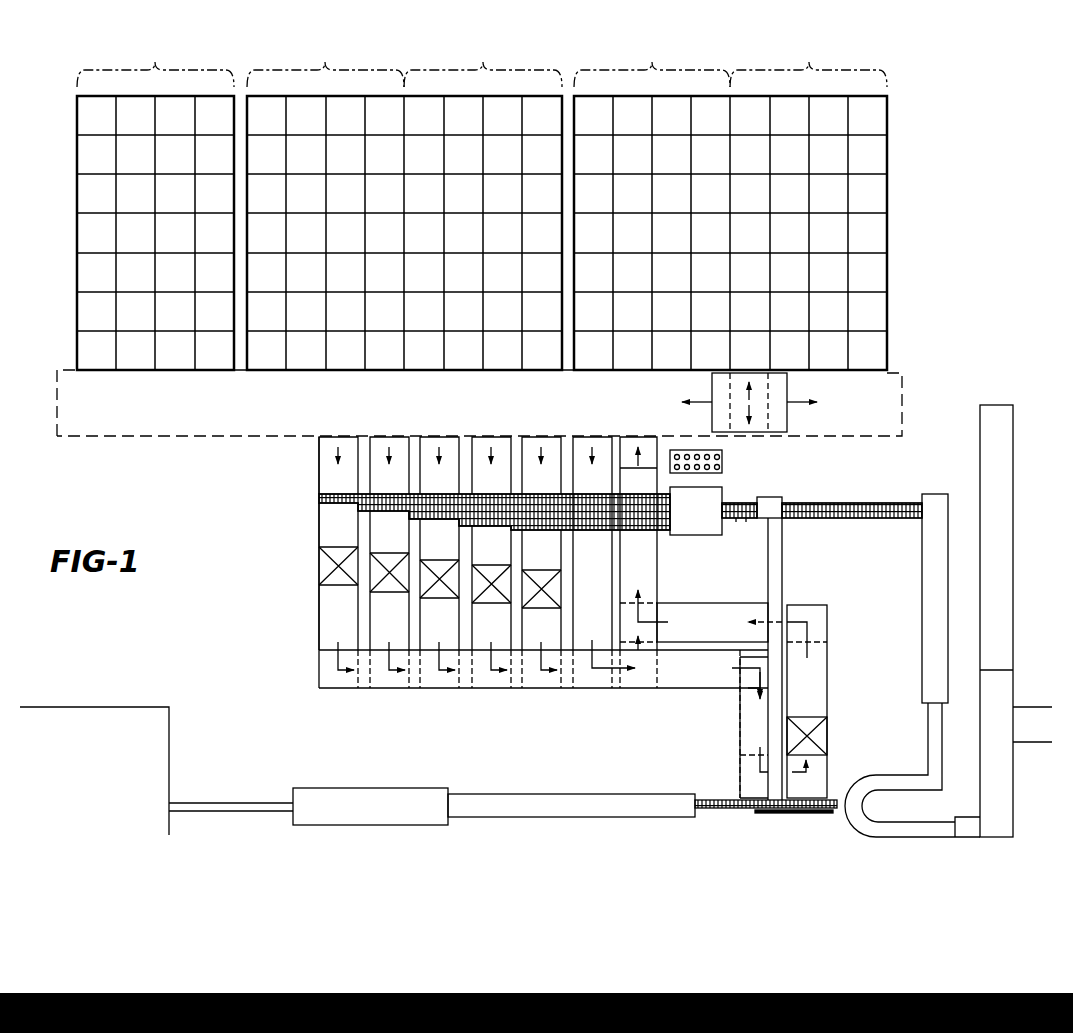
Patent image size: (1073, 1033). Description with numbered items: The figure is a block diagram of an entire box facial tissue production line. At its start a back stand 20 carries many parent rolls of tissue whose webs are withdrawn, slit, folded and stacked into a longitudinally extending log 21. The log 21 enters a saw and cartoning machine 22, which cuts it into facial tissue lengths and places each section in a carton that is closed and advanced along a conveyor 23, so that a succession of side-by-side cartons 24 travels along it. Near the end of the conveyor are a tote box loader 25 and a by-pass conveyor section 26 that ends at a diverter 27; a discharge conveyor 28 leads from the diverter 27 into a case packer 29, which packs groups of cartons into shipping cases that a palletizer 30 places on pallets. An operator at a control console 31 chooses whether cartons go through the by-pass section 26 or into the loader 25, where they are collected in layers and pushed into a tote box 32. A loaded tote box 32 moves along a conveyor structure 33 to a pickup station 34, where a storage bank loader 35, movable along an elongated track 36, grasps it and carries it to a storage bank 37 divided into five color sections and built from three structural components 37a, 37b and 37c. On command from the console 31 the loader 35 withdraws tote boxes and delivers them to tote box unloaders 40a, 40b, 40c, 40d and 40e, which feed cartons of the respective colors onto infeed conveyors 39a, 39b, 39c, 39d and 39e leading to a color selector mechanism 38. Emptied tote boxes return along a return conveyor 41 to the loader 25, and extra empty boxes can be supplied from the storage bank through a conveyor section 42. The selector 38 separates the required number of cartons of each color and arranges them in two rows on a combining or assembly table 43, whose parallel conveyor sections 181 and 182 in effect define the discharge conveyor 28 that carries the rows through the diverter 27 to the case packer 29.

The back stand 20 is at (173, 724).
The log 21 is at (230, 801).
The saw and cartoning machine 22 is at (391, 787).
The conveyor 23 is at (740, 812).
The cartons 24 is at (601, 533).
The tote box loader 25 is at (829, 775).
The by-pass conveyor section 26 is at (765, 722).
The diverter 27 is at (782, 491).
The discharge conveyor 28 is at (873, 500).
The case packer 29 is at (920, 571).
The palletizer 30 is at (1014, 612).
The control console 31 is at (725, 462).
The tote box 32 is at (829, 736).
The conveyor structure 33 is at (735, 602).
The pickup station 34 is at (640, 446).
The storage bank loader 35 is at (792, 416).
The track 36 is at (237, 418).
The storage bank 37 is at (512, 205).
The structural component of storage bank 37a is at (730, 228).
The structural component of storage bank 37b is at (406, 228).
The structural component of storage bank 37c is at (162, 228).
The color selector mechanism 38 is at (706, 540).
The infeed conveyor 39a is at (538, 533).
The infeed conveyor 39b is at (486, 529).
The infeed conveyor 39c is at (434, 522).
The infeed conveyor 39d is at (383, 514).
The infeed conveyor 39e is at (334, 506).
The tote box unloader 40a is at (552, 533).
The tote box unloader 40b is at (497, 529).
The tote box unloader 40c is at (443, 524).
The tote box unloader 40d is at (393, 519).
The tote box unloader 40e is at (347, 514).
The return conveyor 41 is at (524, 690).
The conveyor section 42 is at (589, 438).
The combining or assembly table 43 is at (731, 503).
The conveyor section 181 is at (735, 521).
The conveyor section 182 is at (746, 521).